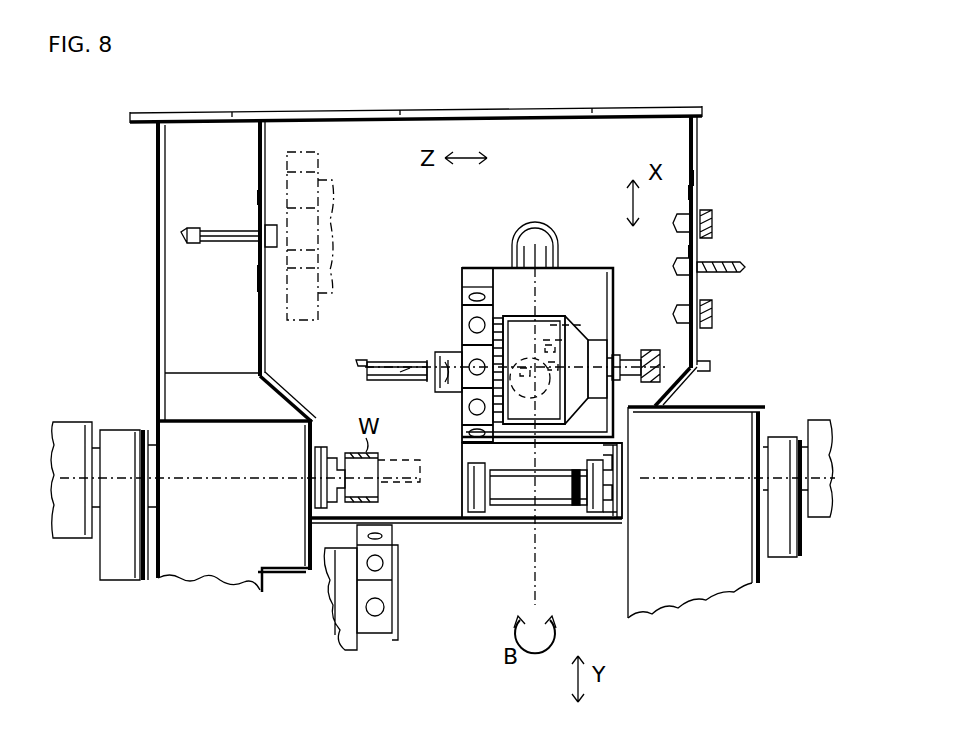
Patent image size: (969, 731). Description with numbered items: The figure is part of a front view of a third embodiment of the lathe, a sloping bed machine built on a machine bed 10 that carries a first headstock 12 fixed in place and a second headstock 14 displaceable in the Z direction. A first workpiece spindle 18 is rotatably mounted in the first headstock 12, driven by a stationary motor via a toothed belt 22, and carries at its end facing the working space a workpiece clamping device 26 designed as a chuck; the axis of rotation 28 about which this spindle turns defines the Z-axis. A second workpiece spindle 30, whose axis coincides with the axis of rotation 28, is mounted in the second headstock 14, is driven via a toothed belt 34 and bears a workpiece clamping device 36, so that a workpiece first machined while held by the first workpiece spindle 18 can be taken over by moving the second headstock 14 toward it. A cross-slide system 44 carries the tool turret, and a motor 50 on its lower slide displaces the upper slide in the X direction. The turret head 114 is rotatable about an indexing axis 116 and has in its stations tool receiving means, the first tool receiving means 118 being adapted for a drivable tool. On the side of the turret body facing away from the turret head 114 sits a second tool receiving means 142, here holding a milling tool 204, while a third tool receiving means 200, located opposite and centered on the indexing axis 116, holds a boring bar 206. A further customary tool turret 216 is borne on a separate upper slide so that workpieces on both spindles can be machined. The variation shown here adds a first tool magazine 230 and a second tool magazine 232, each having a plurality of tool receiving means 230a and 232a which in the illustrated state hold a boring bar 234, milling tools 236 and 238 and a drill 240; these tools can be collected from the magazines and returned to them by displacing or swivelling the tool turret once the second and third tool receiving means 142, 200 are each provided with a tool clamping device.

The machine bed 10 is at (612, 606).
The first headstock 12 is at (212, 568).
The second headstock 14 is at (742, 592).
The first workpiece spindle 18 is at (142, 442).
The toothed belt 22 is at (110, 572).
The workpiece clamping device 26 is at (333, 448).
The axis of rotation 28 is at (196, 476).
The second workpiece spindle 30 is at (810, 450).
The toothed belt 34 is at (796, 546).
The workpiece clamping device 36 is at (606, 514).
The cross-slide system 44 is at (498, 525).
The motor 50 is at (546, 245).
The turret head 114 is at (320, 162).
The indexing axis 116 is at (440, 398).
The first tool receiving means 118 is at (470, 292).
The second tool receiving means 142 is at (598, 336).
The third tool receiving means 200 is at (320, 246).
The milling tool 204 is at (647, 369).
The boring bar 206 is at (378, 362).
The tool turret 216 is at (383, 628).
The first tool magazine 230 is at (278, 158).
The tool receiving means 230a is at (258, 198).
The second tool magazine 232 is at (676, 146).
The tool receiving means 232a is at (700, 180).
The boring bar 234 is at (206, 248).
The milling tool 236 is at (712, 226).
The milling tool 238 is at (712, 320).
The drill 240 is at (728, 266).